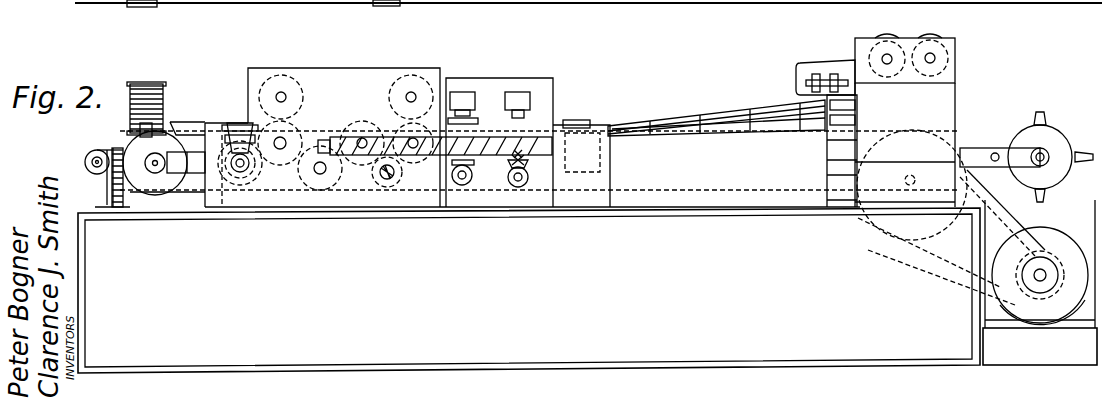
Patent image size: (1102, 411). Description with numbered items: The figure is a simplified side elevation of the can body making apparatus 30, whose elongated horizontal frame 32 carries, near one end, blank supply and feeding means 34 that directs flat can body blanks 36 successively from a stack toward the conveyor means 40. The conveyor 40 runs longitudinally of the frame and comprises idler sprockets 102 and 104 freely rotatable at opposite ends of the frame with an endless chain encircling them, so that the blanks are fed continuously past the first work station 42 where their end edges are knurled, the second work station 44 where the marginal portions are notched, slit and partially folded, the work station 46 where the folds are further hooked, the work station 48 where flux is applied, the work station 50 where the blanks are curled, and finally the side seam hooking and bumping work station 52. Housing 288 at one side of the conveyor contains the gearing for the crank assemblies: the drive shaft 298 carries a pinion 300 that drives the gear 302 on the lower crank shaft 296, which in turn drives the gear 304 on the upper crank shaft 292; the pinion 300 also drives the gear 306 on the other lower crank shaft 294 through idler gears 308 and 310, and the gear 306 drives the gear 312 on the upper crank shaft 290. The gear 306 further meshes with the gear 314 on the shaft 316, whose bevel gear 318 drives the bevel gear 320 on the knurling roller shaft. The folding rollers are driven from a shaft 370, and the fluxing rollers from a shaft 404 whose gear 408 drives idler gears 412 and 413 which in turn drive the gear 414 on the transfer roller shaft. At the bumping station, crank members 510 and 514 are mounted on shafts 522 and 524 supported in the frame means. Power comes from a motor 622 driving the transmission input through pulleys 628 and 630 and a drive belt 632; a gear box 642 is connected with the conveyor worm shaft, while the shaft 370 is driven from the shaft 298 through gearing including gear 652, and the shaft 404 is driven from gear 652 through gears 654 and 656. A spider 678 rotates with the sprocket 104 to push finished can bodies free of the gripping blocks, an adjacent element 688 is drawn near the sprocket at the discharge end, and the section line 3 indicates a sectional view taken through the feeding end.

The section line 3 is at (143, 0).
The apparatus 30 is at (665, 85).
The frame 32 is at (644, 4).
The blank supply and feeding means 34 is at (168, 84).
The can body blanks 36 is at (580, 118).
The conveyor means 40 is at (172, 200).
The first work station 42 is at (241, 70).
The second work station 44 is at (363, 64).
The work station 46 is at (540, 70).
The work station 48 is at (538, 64).
The work station 50 is at (713, 104).
The side seam hooking and bumping work station 52 is at (826, 34).
The idler sprocket 102 is at (138, 196).
The idler sprocket 104 is at (1070, 135).
The housing 288 is at (328, 68).
The upper crank shaft 290 is at (281, 92).
The upper crank shaft 292 is at (446, 80).
The lower crank shaft 294 is at (283, 160).
The lower crank shaft 296 is at (318, 101).
The drive shaft 298 is at (390, 180).
The pinion 300 is at (400, 165).
The gear 302 is at (485, 90).
The gear 304 is at (412, 92).
The gear 306 is at (280, 150).
The idler gear 308 is at (326, 190).
The idler gear 310 is at (360, 165).
The gear 312 is at (245, 95).
The gear 314 is at (222, 207).
The shaft 316 is at (243, 180).
The bevel gear 318 is at (207, 196).
The bevel gear 320 is at (218, 132).
The drive shaft 370 is at (440, 222).
The drive shaft 404 is at (530, 180).
The gear 408 is at (510, 188).
The idler gear 412 is at (598, 122).
The idler gear 413 is at (575, 108).
The gear 414 is at (555, 80).
The crank member 510 is at (934, 38).
The crank member 514 is at (885, 38).
The shaft 522 is at (932, 58).
The shaft 524 is at (885, 58).
The motor 622 is at (1010, 300).
The pulley 628 is at (1000, 270).
The pulley 630 is at (875, 232).
The drive belt 632 is at (880, 252).
The gear box 642 is at (620, 190).
The gear 652 is at (458, 188).
The gear 654 is at (487, 178).
The gear 656 is at (522, 195).
The spider 678 is at (1077, 175).
The arm 688 is at (1036, 112).